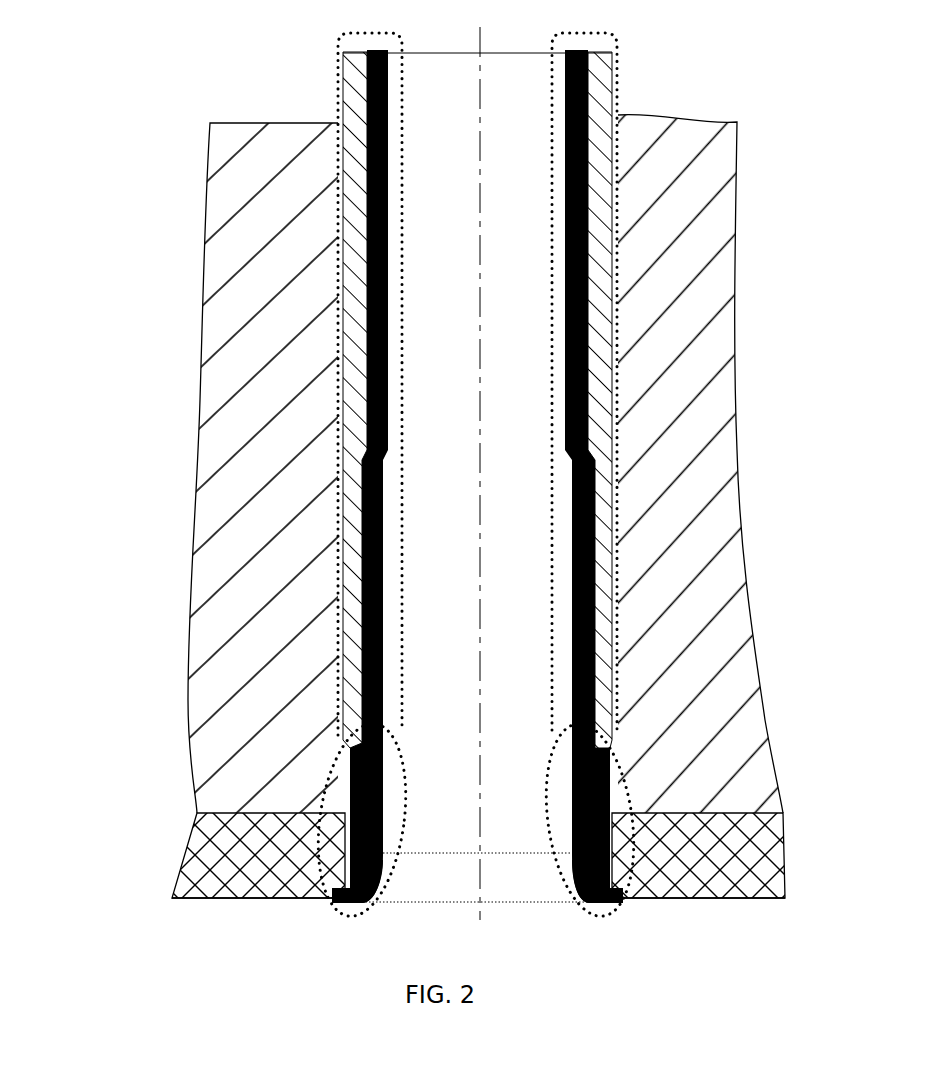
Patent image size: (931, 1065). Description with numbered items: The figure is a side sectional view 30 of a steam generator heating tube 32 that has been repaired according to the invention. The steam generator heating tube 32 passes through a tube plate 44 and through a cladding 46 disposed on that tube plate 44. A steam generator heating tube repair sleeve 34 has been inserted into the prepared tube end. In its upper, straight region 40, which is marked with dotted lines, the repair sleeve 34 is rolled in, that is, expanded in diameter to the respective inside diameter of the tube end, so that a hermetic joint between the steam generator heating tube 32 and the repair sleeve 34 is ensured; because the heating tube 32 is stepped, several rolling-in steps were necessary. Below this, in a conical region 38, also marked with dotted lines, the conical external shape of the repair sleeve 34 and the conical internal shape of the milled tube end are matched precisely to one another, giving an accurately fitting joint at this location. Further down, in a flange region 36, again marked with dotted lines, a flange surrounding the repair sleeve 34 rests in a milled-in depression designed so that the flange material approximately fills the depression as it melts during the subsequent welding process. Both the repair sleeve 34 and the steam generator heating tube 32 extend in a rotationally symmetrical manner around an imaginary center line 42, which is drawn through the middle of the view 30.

The view 30 is at (441, 490).
The steam generator heating tube 32 is at (350, 97).
The steam generator heating tube repair sleeve 34 is at (568, 520).
The flange region 36 is at (573, 903).
The conical region 38 is at (553, 797).
The straight region 40 is at (552, 400).
The center line 42 is at (477, 658).
The tube plate 44 is at (241, 474).
The cladding 46 is at (197, 850).